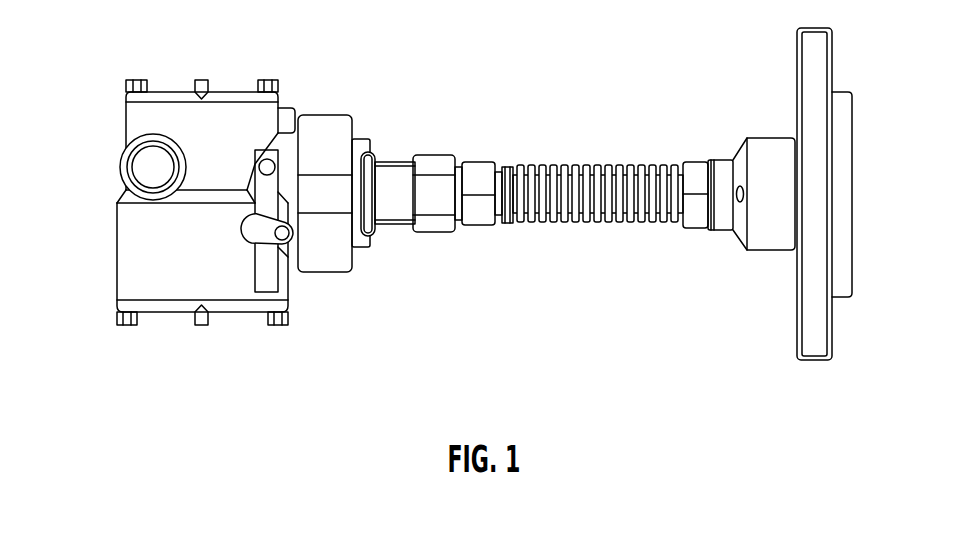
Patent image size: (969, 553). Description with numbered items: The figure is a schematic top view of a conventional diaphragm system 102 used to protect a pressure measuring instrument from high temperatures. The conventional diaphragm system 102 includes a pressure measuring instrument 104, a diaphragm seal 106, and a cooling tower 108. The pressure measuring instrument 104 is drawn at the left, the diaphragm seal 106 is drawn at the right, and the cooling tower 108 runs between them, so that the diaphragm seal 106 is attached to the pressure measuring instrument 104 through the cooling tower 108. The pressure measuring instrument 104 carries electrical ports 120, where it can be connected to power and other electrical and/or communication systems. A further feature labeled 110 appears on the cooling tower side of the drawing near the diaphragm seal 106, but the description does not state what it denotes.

The conventional diaphragm system 102 is at (123, 31).
The pressure measuring instrument 104 is at (433, 358).
The diaphragm seal 106 is at (695, 358).
The cooling tower 108 is at (695, 358).
The indicator marker on fitting 110 is at (740, 186).
The electrical ports 120 is at (128, 170).